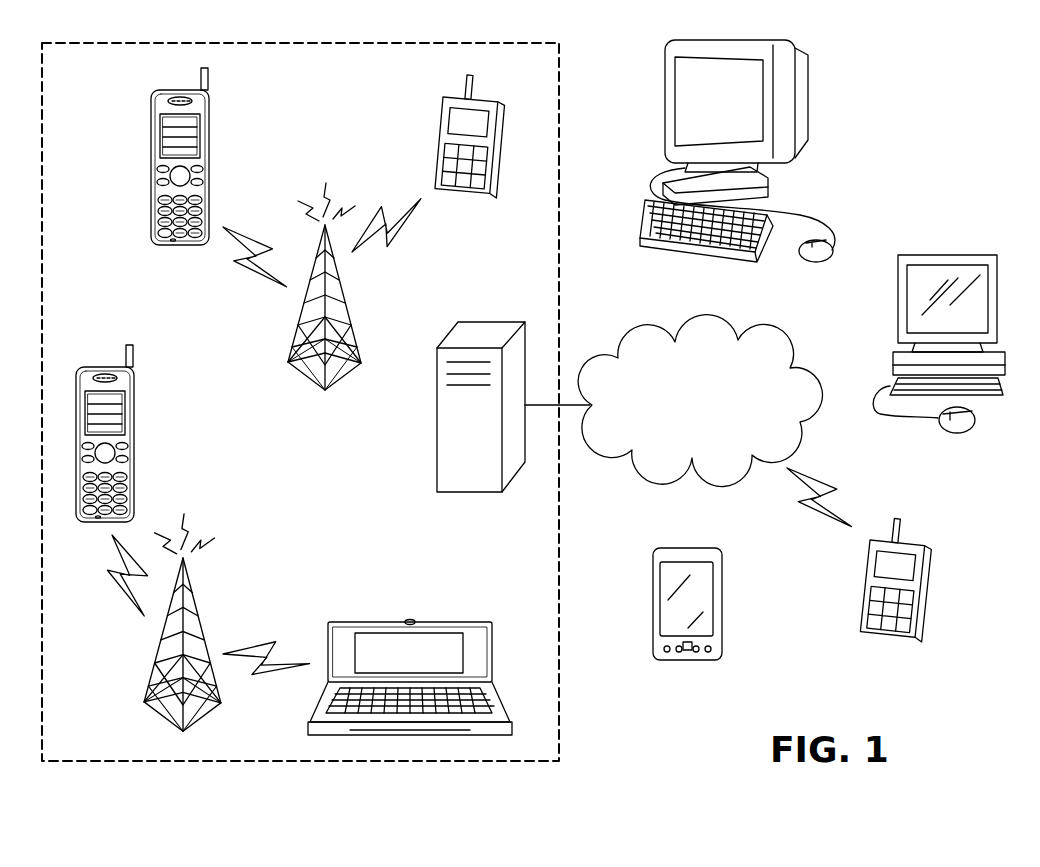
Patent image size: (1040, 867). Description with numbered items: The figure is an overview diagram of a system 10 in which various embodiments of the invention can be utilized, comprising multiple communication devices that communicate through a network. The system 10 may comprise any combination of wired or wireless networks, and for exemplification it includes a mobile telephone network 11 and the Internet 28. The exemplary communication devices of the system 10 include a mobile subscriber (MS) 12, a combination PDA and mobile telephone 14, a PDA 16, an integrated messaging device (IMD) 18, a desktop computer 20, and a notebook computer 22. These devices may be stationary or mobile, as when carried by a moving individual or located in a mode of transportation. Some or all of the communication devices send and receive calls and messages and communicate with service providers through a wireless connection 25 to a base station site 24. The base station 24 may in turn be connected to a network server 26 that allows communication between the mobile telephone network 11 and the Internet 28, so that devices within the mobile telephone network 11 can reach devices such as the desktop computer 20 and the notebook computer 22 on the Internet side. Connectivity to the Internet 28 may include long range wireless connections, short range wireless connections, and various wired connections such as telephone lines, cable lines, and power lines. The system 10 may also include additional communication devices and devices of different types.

The system 10 is at (989, 498).
The mobile telephone network 11 is at (84, 81).
The mobile subscriber 12 is at (211, 167).
The combination PDA and mobile telephone 14 is at (410, 620).
The PDA 16 is at (722, 600).
The integrated messaging device 18 is at (440, 140).
The desktop computer 20 is at (808, 90).
The notebook computer 22 is at (948, 255).
The base station site 24 is at (346, 292).
The wireless connection 25 is at (130, 600).
The network server 26 is at (437, 418).
The Internet 28 is at (736, 338).